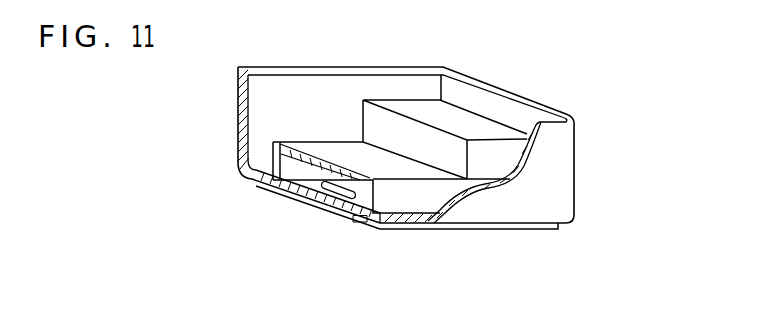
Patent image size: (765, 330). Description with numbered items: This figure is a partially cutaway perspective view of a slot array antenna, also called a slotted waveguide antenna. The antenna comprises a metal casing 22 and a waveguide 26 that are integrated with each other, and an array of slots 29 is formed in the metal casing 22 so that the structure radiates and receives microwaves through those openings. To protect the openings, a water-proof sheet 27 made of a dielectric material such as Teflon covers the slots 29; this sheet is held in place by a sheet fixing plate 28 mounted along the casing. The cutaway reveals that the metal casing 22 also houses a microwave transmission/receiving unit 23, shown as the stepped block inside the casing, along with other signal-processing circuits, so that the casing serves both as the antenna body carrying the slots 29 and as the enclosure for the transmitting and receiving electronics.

The metal casing 22 is at (537, 99).
The microwave transmission/receiving unit 23 is at (362, 117).
The waveguide 26 is at (273, 164).
The water-proof sheet 27 is at (248, 177).
The sheet fixing plate 28 is at (249, 184).
The slots 29 is at (325, 207).